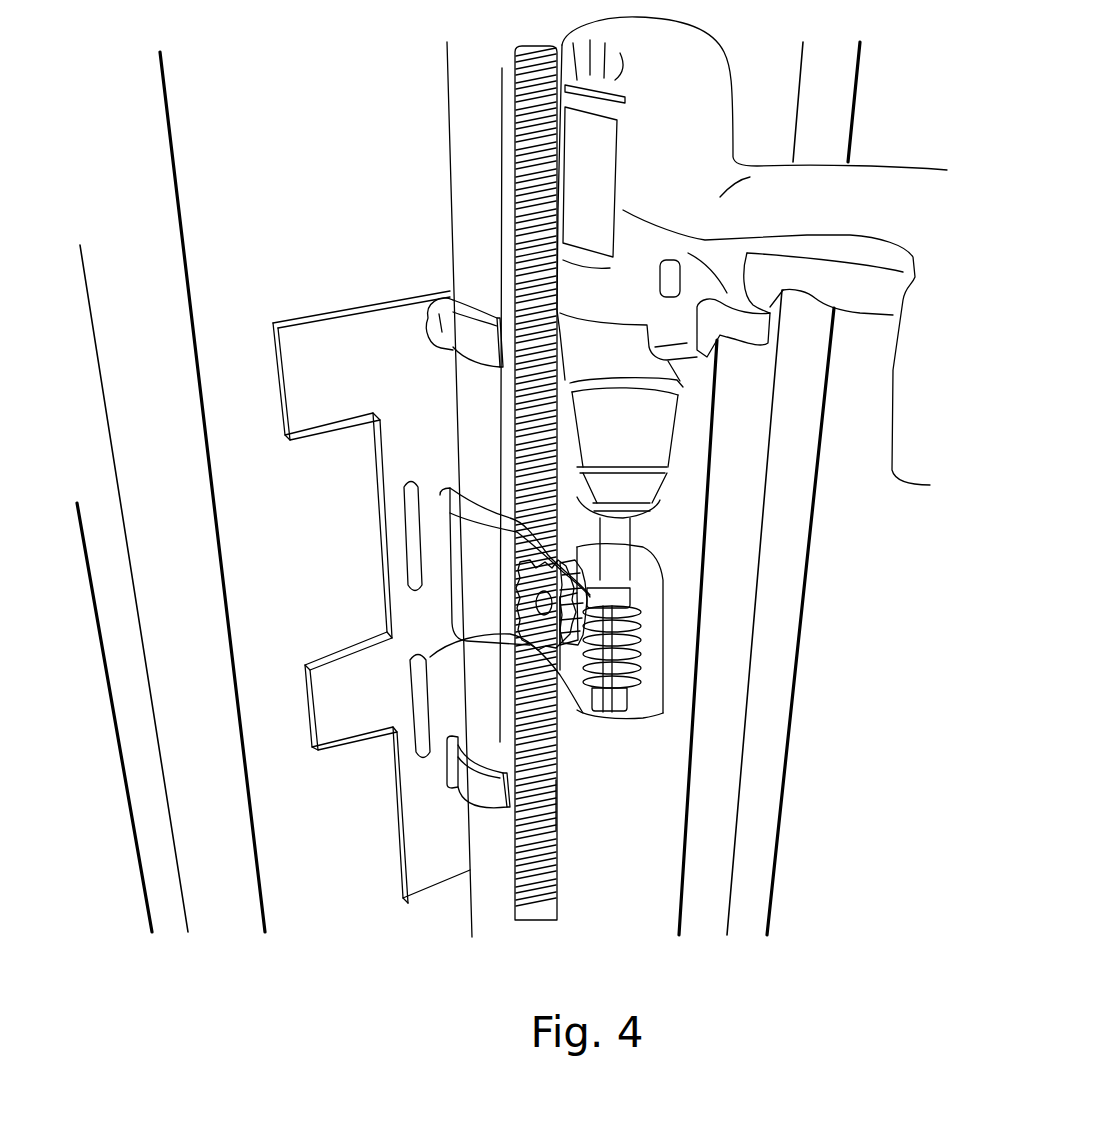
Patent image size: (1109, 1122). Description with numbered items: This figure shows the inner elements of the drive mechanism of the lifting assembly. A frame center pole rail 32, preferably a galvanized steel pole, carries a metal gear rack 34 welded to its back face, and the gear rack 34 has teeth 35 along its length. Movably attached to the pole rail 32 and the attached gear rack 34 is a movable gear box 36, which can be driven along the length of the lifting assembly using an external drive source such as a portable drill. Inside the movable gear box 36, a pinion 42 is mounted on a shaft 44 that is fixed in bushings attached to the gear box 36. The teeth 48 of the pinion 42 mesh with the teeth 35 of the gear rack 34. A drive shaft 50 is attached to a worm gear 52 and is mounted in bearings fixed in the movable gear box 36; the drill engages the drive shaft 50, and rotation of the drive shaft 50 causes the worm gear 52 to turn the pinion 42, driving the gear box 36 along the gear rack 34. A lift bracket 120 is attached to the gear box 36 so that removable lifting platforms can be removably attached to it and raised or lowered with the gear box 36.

The lift bracket 120 is at (297, 283).
The frame center pole rail 32 is at (490, 908).
The gear rack 34 is at (547, 835).
The teeth 35 is at (557, 795).
The movable gear box 36 is at (450, 648).
The pinion 42 is at (587, 595).
The shaft 44 is at (535, 607).
The teeth 48 is at (632, 536).
The drive shaft 50 is at (625, 595).
The worm gear 52 is at (645, 662).